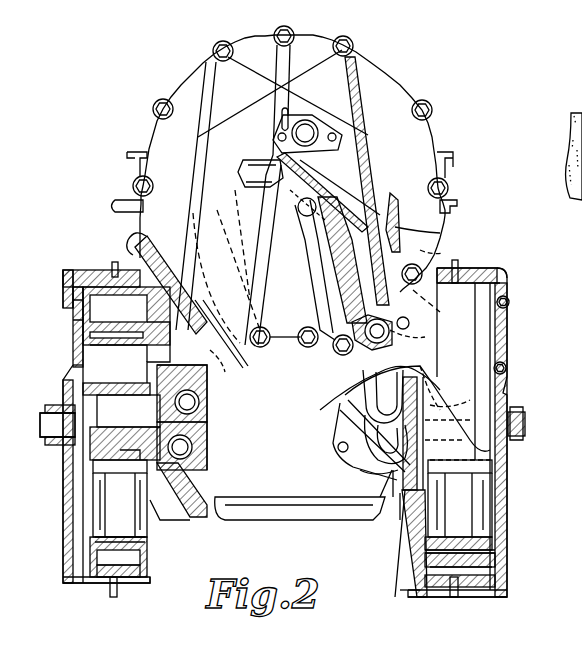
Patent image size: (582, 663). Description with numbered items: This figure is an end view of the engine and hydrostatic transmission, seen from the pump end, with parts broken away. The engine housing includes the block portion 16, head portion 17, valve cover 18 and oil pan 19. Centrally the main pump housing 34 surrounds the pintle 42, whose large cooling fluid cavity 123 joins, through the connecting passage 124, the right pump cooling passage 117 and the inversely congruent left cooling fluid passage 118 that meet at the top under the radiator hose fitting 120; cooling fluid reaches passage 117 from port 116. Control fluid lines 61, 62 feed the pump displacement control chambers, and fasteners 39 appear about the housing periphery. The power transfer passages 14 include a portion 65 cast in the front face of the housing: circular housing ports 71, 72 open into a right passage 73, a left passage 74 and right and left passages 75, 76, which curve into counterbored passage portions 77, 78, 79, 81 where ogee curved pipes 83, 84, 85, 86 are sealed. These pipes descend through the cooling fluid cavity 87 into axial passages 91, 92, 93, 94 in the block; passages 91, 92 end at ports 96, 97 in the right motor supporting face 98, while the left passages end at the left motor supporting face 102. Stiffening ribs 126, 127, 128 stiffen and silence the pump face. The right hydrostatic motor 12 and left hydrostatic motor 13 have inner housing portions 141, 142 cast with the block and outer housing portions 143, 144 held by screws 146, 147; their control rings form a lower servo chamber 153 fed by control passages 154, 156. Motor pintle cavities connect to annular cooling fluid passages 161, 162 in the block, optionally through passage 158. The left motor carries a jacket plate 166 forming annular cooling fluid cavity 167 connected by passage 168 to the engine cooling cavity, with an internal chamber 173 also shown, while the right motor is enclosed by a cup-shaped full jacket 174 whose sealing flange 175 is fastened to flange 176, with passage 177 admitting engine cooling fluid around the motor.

The right hydrostatic motor 12 is at (458, 436).
The left hydrostatic motor 13 is at (290, 426).
The power transfer passages 14 is at (240, 467).
The engine block portion 16 is at (252, 506).
The head portion 17 is at (133, 163).
The valve cover 18 is at (140, 133).
The oil pan 19 is at (300, 512).
The main pump housing 34 is at (370, 70).
The bolt 39 is at (160, 100).
The pintle 42 is at (262, 231).
The control fluid line 61 is at (456, 211).
The control fluid line 62 is at (112, 205).
The power transfer passage portion 65 is at (358, 177).
The circular housing port 71 is at (255, 176).
The circular housing port 72 is at (309, 206).
The right passage 73 is at (357, 210).
The left passage 74 is at (208, 215).
The right passage 75 is at (323, 258).
The left passage 76 is at (250, 302).
The counterbored passage portion 77 is at (410, 324).
The counterbored passage portion 78 is at (335, 363).
The counterbored passage portion 79 is at (238, 346).
The counterbored passage portion 81 is at (182, 322).
The ogee curved pipe 83 is at (390, 376).
The ogee curved pipe 84 is at (338, 447).
The ogee curved pipe 85 is at (225, 369).
The ogee curved pipe 86 is at (207, 396).
The cooling fluid cavity 87 is at (420, 338).
The axial passage 91 is at (333, 426).
The axial passage 92 is at (373, 492).
The axial passage 93 is at (215, 421).
The axial passage 94 is at (205, 447).
The port 96 is at (420, 391).
The port 97 is at (393, 498).
The right motor supporting face 98 is at (398, 471).
The left motor supporting face 102 is at (160, 447).
The cooling port 116 is at (428, 290).
The right pump cooling passage 117 is at (440, 333).
The left cooling fluid passage 118 is at (173, 217).
The radiator hose fitting 120 is at (322, 128).
The pintle cooling fluid cavity 123 is at (327, 156).
The connecting passage 124 is at (278, 160).
The stiffening rib 126 is at (212, 80).
The stiffening rib 127 is at (275, 27).
The stiffening rib 128 is at (357, 60).
The inner housing portion 141 is at (505, 372).
The inner housing portion 142 is at (112, 270).
The outer housing portion 143 is at (507, 281).
The outer housing portion 144 is at (68, 290).
The screws 146 is at (510, 305).
The screws 147 is at (60, 275).
The lower servo chamber 153 is at (498, 590).
The control passage 154 is at (460, 277).
The control passage 156 is at (113, 586).
The passage 158 is at (155, 505).
The annular cooling fluid passage 161 is at (203, 490).
The annular cooling fluid passage 162 is at (402, 516).
The jacket plate 166 is at (73, 362).
The annular cooling fluid cavity 167 is at (72, 316).
The passage 168 is at (80, 278).
The chamber 173 is at (142, 348).
The full jacket 174 is at (505, 516).
The sealing flange 175 is at (428, 599).
The flange 176 is at (413, 592).
The passage 177 is at (443, 254).